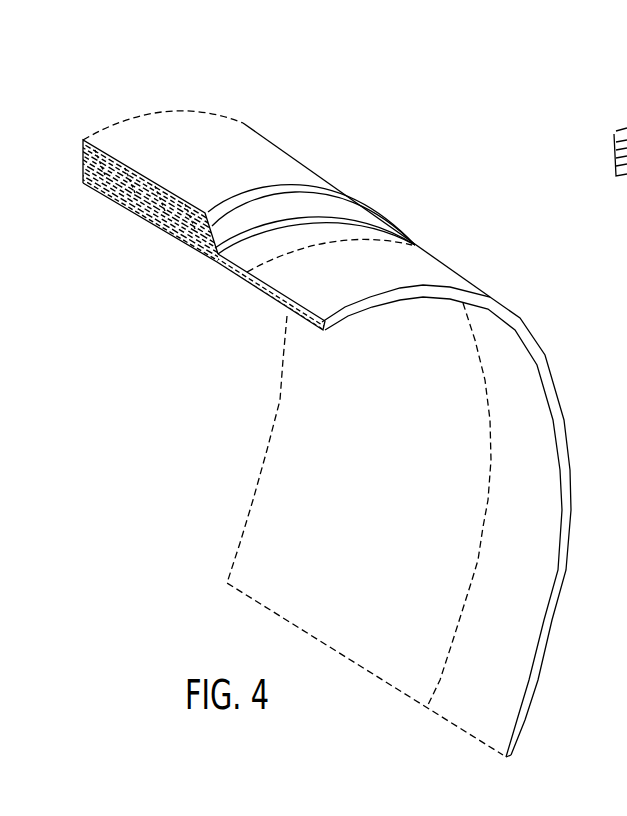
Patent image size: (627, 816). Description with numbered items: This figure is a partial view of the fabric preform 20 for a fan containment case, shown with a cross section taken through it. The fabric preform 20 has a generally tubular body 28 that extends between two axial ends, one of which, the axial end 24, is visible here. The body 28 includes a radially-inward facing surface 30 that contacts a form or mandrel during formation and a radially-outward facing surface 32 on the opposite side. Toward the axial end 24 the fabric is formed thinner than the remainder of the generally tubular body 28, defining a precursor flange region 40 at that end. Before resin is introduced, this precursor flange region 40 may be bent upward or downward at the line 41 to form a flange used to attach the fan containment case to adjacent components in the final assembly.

The fabric preform 20 is at (378, 153).
The axial end 24 is at (578, 426).
The generally tubular body 28 is at (265, 151).
The radially-inward facing surface 30 is at (357, 413).
The radially-outward facing surface 32 is at (223, 162).
The precursor flange region 40 is at (413, 268).
The line 41 is at (483, 527).